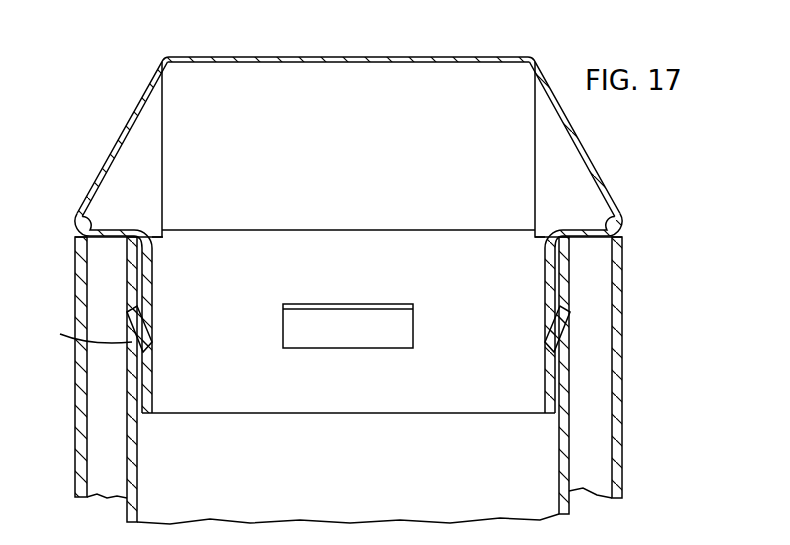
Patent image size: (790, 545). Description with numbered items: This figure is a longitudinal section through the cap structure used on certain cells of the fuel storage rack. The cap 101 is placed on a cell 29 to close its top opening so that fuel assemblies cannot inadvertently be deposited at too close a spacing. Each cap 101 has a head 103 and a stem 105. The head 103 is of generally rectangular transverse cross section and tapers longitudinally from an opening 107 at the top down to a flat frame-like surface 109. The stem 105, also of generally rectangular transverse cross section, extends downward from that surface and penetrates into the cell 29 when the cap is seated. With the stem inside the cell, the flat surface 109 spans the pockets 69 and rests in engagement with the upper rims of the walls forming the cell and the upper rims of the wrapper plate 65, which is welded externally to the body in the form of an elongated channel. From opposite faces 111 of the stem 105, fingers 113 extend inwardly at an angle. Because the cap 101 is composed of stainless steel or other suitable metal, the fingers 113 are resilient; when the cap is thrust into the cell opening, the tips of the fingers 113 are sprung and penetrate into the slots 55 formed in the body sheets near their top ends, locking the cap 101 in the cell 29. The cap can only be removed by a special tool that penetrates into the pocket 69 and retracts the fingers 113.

The cap 101 is at (348, 221).
The head 103 is at (373, 140).
The stem 105 is at (366, 283).
The opening 107 is at (360, 57).
The flat frame-like surface 109 is at (112, 233).
The opposite faces of the stem 111 is at (148, 269).
The fingers 113 is at (137, 323).
The pocket 69 is at (592, 332).
The wrapper plate channel 65 is at (617, 366).
The cell 29 is at (353, 475).
The slot 55 is at (85, 336).